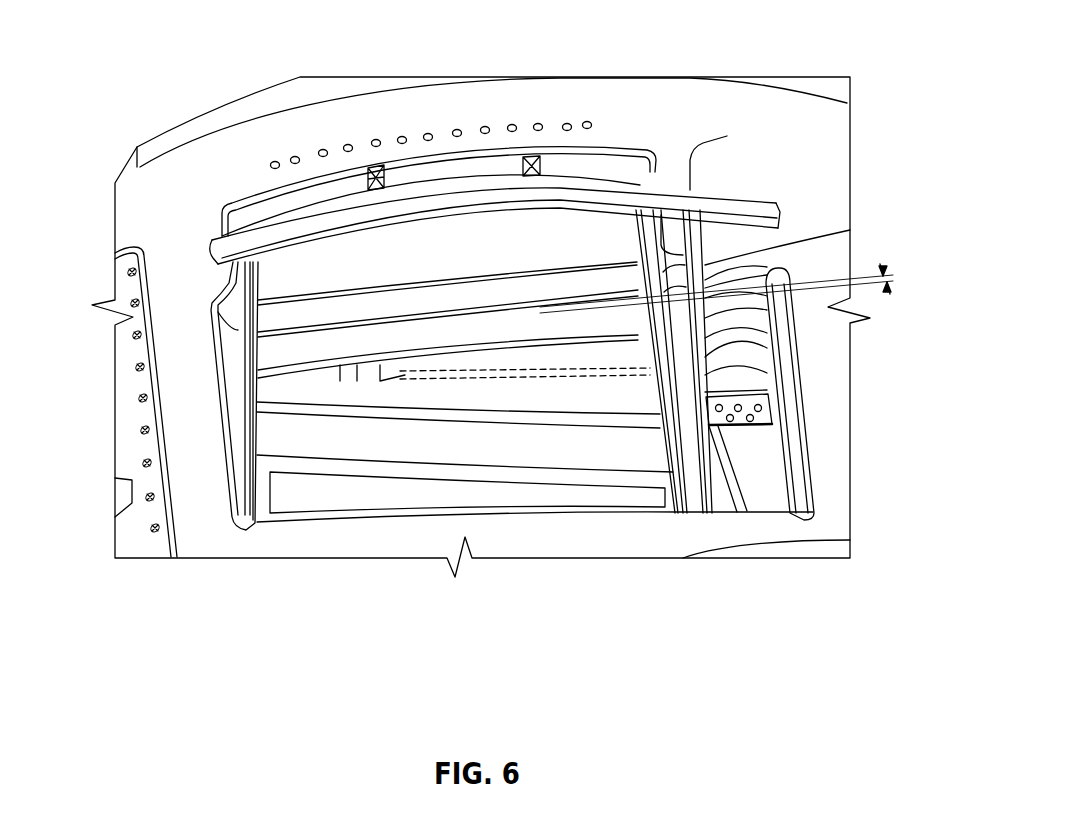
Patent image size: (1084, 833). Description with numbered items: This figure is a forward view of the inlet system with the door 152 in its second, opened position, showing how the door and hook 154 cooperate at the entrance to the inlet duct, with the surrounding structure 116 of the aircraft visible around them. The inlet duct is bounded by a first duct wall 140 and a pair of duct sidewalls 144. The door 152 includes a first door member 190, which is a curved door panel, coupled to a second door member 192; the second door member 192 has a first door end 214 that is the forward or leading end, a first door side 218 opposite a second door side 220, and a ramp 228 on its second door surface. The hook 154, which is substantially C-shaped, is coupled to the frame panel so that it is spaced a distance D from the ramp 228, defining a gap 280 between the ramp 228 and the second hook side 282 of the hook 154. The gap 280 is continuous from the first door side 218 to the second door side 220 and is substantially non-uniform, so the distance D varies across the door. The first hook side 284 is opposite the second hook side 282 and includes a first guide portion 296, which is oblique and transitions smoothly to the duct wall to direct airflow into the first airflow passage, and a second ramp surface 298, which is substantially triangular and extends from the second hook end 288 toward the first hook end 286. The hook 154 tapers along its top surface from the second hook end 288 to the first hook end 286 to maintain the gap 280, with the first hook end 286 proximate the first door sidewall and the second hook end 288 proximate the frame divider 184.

The housing 116 is at (838, 110).
The first duct wall 140 is at (427, 510).
The duct sidewalls 144 is at (812, 458).
The door 152 is at (584, 193).
The hook 154 is at (790, 361).
The frame divider 184 is at (693, 473).
The first door member 190 is at (559, 173).
The second door member 192 is at (582, 209).
The first door end 214 is at (617, 337).
The first door side 218 is at (217, 263).
The second door side 220 is at (715, 257).
The ramp 228 is at (700, 268).
The gap 280 is at (547, 333).
The second hook side 282 is at (265, 375).
The first hook side 284 is at (709, 398).
The first hook end 286 is at (265, 412).
The second hook end 288 is at (670, 345).
The first guide portion 296 is at (788, 361).
The second ramp surface 298 is at (835, 305).
The distance D is at (888, 278).